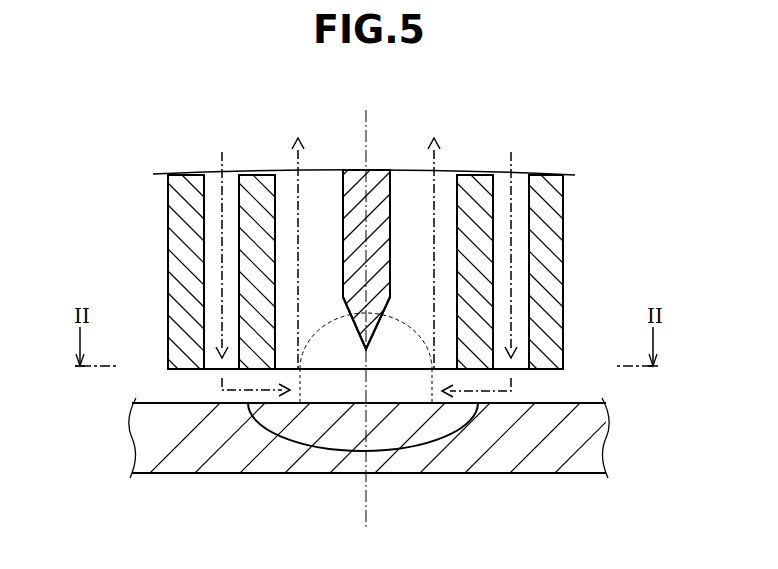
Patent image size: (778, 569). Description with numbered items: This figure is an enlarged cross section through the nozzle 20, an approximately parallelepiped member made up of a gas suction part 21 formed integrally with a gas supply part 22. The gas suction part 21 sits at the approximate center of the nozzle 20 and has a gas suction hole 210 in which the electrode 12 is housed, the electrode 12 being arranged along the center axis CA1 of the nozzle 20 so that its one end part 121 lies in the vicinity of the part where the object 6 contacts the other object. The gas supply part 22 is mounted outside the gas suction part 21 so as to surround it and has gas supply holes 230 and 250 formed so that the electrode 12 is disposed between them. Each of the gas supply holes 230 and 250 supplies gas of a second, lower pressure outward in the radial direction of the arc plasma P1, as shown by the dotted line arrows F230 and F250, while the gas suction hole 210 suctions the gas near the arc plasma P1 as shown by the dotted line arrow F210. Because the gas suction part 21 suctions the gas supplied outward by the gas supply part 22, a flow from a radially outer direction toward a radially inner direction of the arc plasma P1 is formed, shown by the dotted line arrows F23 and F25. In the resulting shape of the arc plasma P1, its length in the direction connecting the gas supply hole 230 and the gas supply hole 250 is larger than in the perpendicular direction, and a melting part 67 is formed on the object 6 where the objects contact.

The object 6 is at (585, 427).
The electrode 12 is at (381, 200).
The nozzle 20 is at (581, 163).
The gas suction part 21 is at (490, 328).
The gas supply part 22 is at (538, 350).
The melting part 67 is at (358, 443).
The one end part of the electrode 121 is at (360, 318).
The gas suction hole 210 is at (403, 297).
The gas supply hole 230 is at (517, 252).
The gas supply hole 250 is at (217, 255).
The gas suction flow F210 is at (292, 158).
The gas supply flow F230 is at (512, 215).
The gas supply flow F250 is at (217, 223).
The gas flow F23 is at (477, 397).
The gas flow F25 is at (256, 392).
The arc plasma P1 is at (290, 393).
The center axis CA1 is at (366, 522).